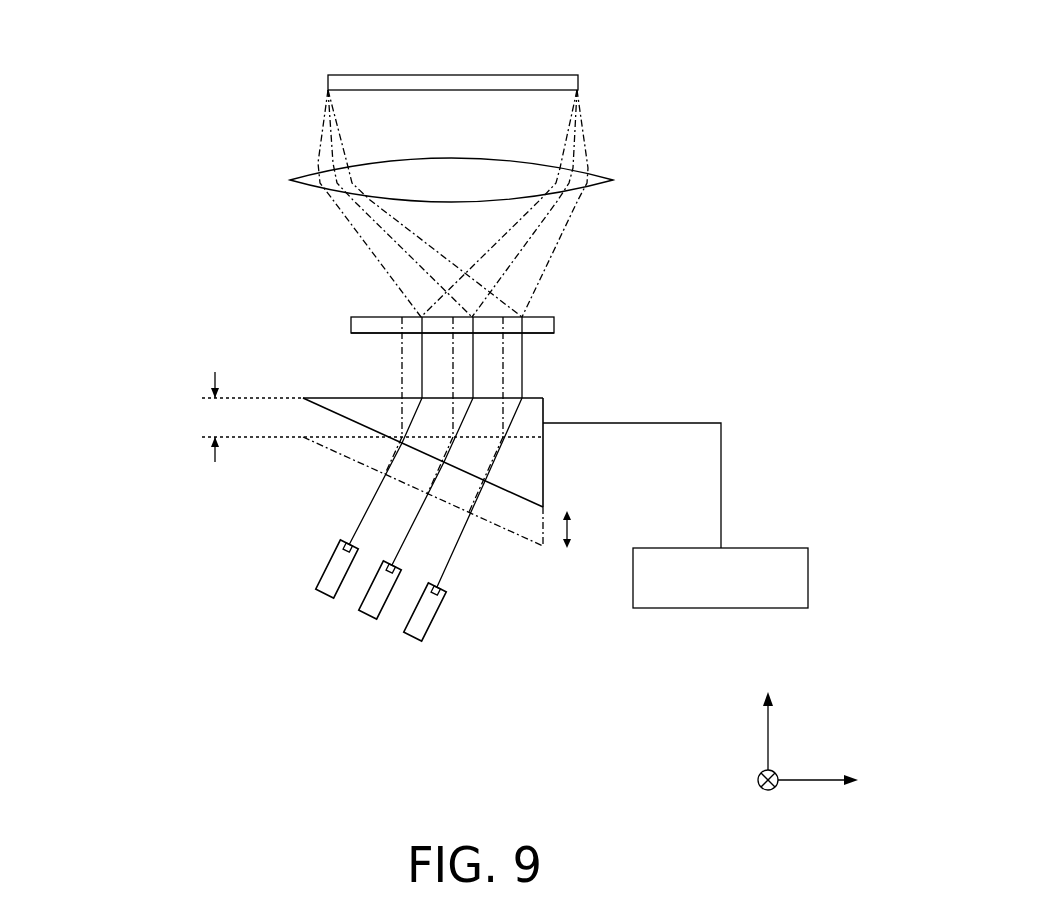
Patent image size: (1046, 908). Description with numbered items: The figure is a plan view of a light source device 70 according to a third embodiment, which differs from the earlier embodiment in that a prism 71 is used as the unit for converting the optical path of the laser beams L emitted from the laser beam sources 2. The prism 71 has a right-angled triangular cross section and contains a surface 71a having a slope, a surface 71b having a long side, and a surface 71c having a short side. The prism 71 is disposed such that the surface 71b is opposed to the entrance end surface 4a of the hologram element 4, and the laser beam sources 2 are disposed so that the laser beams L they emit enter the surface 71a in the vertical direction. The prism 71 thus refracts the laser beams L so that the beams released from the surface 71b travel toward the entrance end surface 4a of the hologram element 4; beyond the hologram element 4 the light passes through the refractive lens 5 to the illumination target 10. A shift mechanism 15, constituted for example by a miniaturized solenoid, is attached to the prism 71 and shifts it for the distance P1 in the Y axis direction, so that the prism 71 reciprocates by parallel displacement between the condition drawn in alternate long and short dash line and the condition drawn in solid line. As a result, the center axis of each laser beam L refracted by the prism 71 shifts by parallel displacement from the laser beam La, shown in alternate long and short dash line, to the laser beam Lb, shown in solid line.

The light source device 70 is at (202, 131).
The illumination target 10 is at (578, 80).
The refractive lens 5 is at (613, 180).
The hologram element 4 is at (556, 318).
The entrance end surface 4a is at (533, 334).
The prism 71 is at (427, 471).
The surface having a slope 71a is at (513, 495).
The surface having a long side 71b is at (543, 399).
The surface having a short side 71c is at (545, 467).
The laser beam sources 2 is at (316, 589).
The shift mechanism 15 is at (697, 608).
The laser beams L is at (443, 571).
The laser beam La is at (400, 353).
The laser beam Lb is at (524, 363).
The distance P1 is at (362, 417).